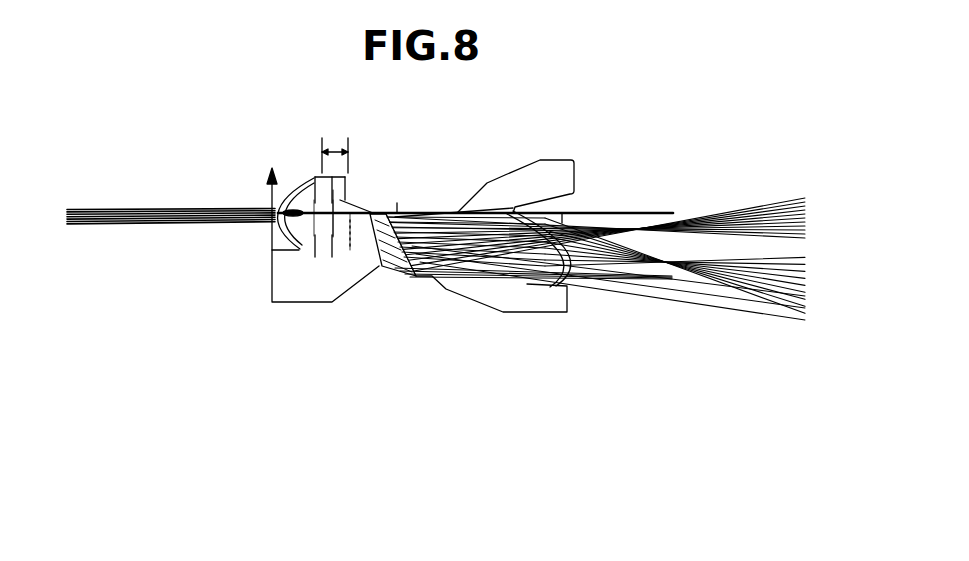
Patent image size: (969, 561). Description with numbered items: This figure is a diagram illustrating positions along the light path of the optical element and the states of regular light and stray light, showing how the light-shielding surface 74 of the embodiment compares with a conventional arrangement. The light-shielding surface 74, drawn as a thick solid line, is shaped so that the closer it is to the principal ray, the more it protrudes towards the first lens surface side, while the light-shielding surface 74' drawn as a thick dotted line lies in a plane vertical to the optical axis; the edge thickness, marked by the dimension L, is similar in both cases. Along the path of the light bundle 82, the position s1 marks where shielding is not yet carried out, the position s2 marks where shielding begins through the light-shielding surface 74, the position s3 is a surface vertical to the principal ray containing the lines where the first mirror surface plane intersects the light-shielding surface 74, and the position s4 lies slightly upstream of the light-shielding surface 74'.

The light-shielding surface 74 is at (325, 192).
The light-shielding surface 74' is at (380, 200).
The lens thickness L is at (335, 148).
The light beam 82 is at (800, 232).
The position s1 is at (320, 250).
The position s2 is at (334, 253).
The position s3 is at (340, 251).
The position s4 is at (416, 276).